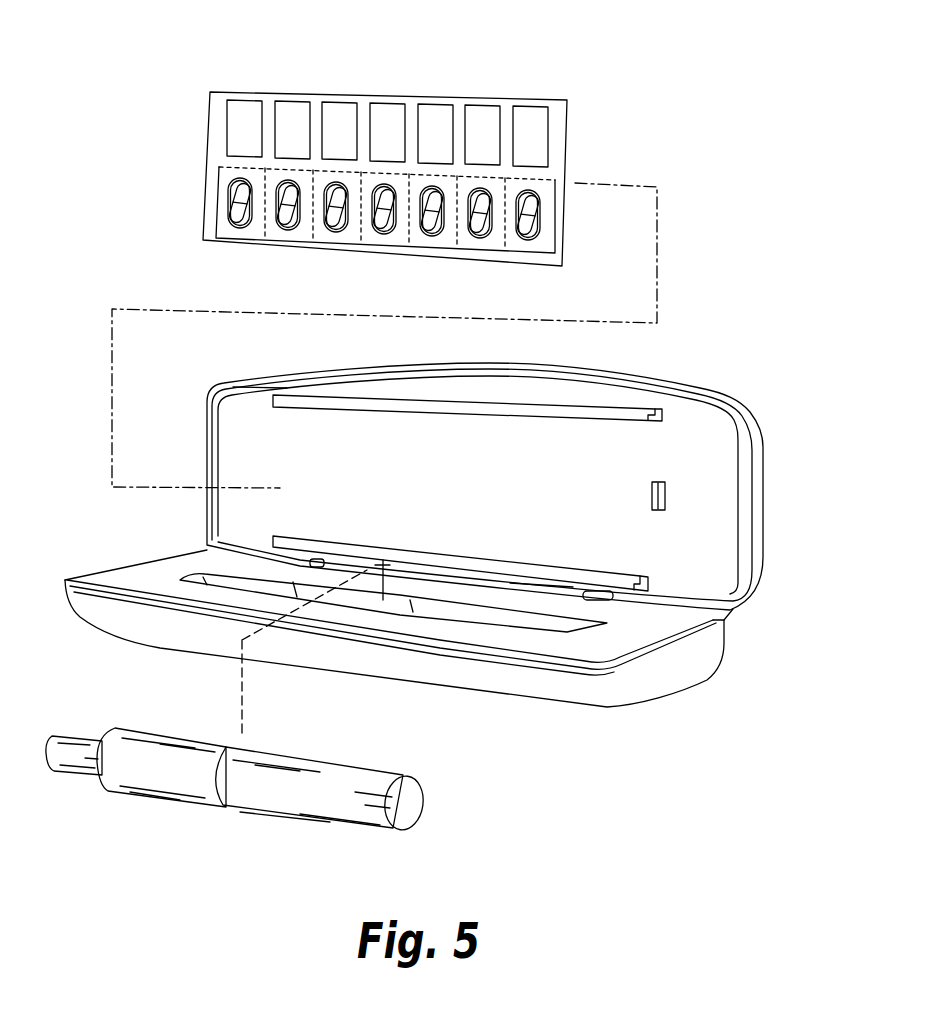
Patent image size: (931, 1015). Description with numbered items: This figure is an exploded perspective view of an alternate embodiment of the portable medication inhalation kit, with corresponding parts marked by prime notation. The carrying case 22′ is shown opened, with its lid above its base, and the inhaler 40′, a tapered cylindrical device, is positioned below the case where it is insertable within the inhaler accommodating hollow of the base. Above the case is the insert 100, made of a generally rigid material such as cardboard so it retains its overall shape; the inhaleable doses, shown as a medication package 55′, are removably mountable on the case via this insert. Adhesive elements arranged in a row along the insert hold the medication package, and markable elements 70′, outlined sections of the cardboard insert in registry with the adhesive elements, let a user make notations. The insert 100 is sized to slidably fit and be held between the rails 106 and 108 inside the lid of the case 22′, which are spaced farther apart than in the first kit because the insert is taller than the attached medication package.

The markable elements 70′ is at (543, 132).
The insert 100 is at (547, 96).
The medication package 55′ is at (338, 158).
The rail 106 is at (627, 412).
The rail 108 is at (627, 574).
The carrying case 22′ is at (441, 526).
The inhaler 40′ is at (224, 826).